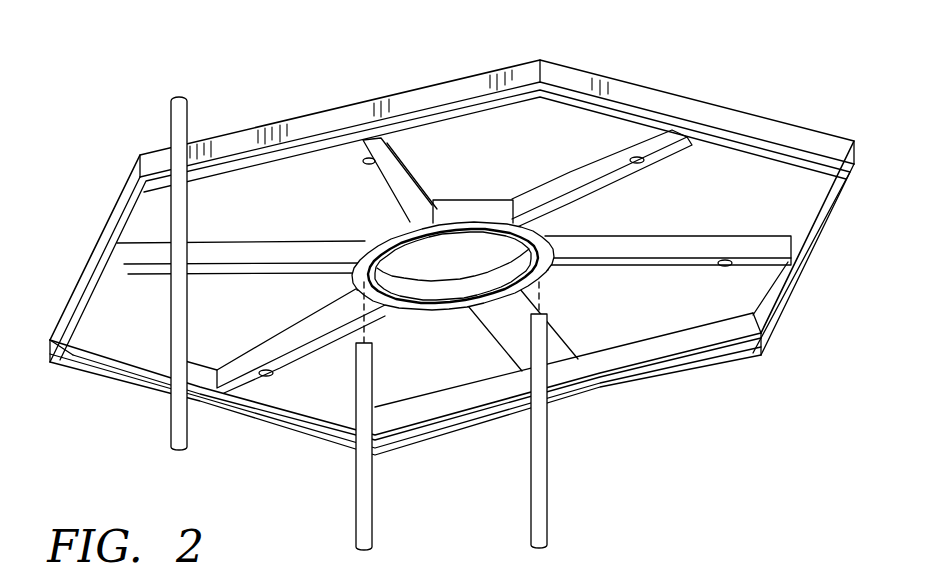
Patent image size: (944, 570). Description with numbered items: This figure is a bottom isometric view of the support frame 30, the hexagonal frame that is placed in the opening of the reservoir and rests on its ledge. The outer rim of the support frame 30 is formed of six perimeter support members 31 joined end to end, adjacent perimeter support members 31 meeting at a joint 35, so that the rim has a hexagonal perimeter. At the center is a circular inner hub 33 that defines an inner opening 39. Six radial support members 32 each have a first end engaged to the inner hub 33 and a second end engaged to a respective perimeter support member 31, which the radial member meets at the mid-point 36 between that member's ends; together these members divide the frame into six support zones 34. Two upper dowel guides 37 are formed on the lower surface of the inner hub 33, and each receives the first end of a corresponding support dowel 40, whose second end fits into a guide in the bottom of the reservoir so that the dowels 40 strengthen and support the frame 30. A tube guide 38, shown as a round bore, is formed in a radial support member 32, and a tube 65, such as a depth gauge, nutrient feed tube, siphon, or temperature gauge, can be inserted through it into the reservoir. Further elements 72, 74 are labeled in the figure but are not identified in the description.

The support frame 30 is at (79, 188).
The perimeter support member 31 is at (797, 132).
The radial support member 32 is at (400, 170).
The inner hub 33 is at (478, 208).
The support zone 34 is at (560, 128).
The joint 35 is at (142, 158).
The mid-point 36 is at (343, 118).
The upper dowel guide 37 is at (350, 277).
The tube guide 38 is at (363, 160).
The inner opening 39 is at (440, 262).
The support dowel 40 is at (540, 512).
The tube 65 is at (173, 432).
The support member 72 is at (749, 569).
The support member 74 is at (659, 560).